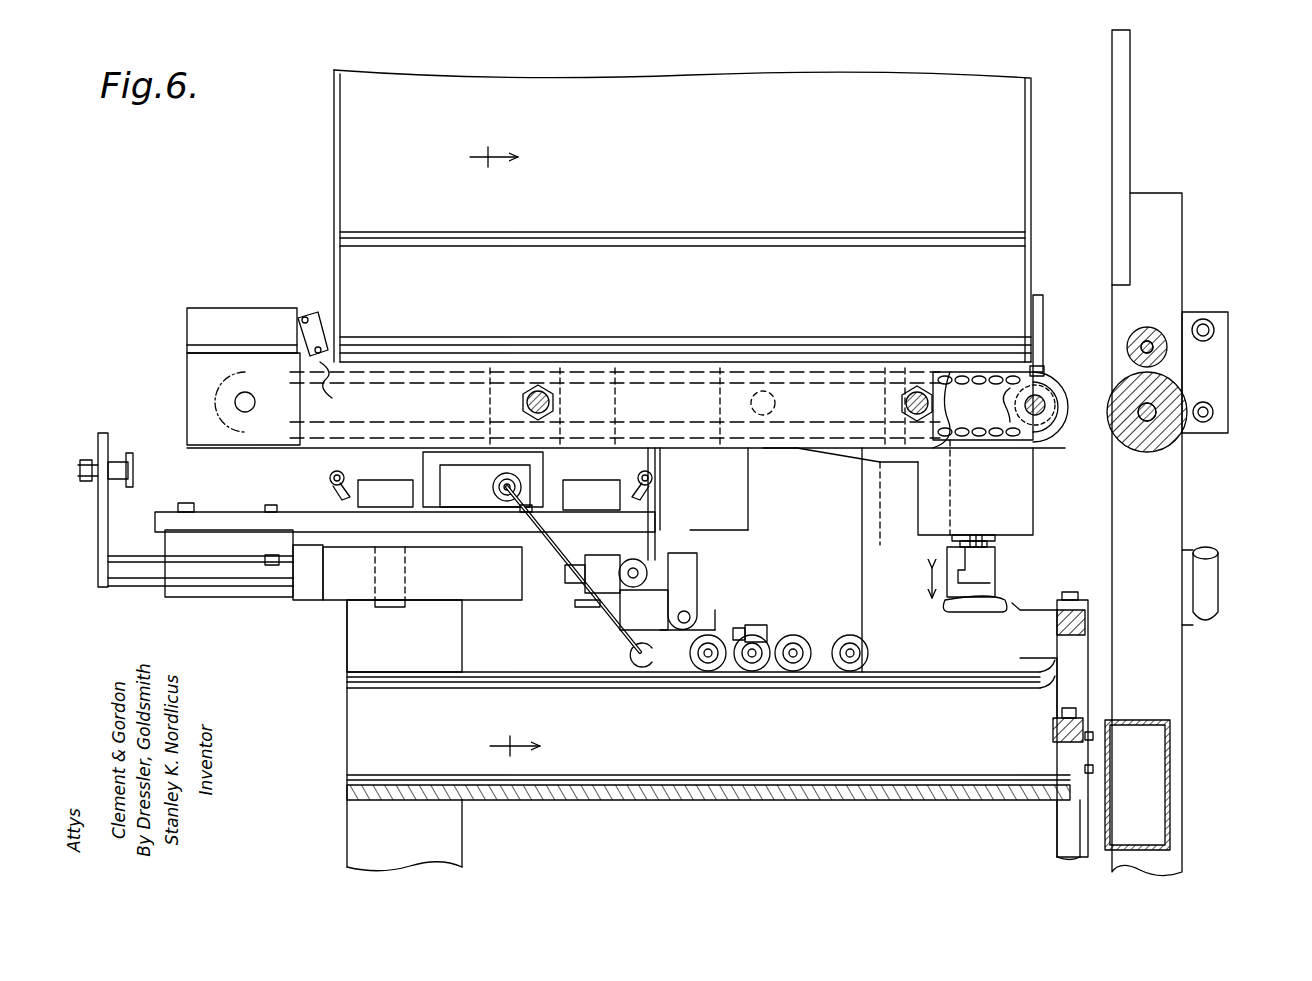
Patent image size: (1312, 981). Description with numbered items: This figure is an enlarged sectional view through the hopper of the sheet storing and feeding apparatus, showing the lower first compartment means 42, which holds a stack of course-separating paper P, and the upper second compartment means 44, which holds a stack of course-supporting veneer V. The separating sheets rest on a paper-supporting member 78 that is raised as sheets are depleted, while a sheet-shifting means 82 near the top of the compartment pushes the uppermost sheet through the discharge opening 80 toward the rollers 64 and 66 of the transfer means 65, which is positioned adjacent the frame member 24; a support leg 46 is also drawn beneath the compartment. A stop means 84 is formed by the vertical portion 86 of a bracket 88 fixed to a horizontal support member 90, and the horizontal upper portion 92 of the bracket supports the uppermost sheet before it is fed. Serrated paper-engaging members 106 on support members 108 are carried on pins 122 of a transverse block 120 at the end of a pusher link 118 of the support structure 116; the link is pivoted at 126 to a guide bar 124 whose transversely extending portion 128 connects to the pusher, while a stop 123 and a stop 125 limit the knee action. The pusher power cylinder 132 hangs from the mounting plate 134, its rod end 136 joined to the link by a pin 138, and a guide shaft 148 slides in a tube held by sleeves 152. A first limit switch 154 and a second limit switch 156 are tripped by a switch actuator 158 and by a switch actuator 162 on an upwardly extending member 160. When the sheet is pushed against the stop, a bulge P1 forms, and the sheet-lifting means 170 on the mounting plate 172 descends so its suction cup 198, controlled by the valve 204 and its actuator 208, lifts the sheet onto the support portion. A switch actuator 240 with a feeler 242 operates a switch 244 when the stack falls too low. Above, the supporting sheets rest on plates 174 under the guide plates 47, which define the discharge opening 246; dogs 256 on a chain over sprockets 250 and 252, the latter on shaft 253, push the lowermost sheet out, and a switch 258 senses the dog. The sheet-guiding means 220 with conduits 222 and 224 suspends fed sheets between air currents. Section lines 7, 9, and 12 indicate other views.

The section line 12 is at (485, 452).
The second compartment means 44 is at (334, 216).
The veneer V is at (762, 238).
The guide plates 47 is at (1033, 318).
The transfer means 65 is at (1192, 366).
The sheet-guiding means 220 is at (1230, 396).
The conduit 222 is at (1206, 320).
The conduit 224 is at (1205, 422).
The roller 66 is at (1140, 440).
The roller 64 is at (1135, 340).
The section line 7 is at (95, 415).
The frame member 24 is at (1172, 752).
The discharge opening 80 is at (1082, 650).
The vertical portion 86 is at (1088, 682).
The bracket 88 is at (1052, 722).
The support member 90 is at (1066, 745).
The upper portion 92 is at (1037, 657).
The support leg 46 is at (1055, 825).
The first compartment means 42 is at (346, 801).
The paper-supporting member 78 is at (766, 800).
The sheet-shifting means 82 is at (343, 655).
The bulge P1 is at (972, 692).
The stop means 84 is at (1050, 698).
The paper P is at (503, 672).
The feeler 242 is at (644, 668).
The stop 123 is at (718, 672).
The pins 122 is at (755, 672).
The paper-engaging members 106 is at (870, 652).
The support member 108 is at (822, 645).
The dogs 256 is at (1010, 362).
The switch 244 is at (462, 468).
The switch actuator 240 is at (590, 545).
The stop 125 is at (622, 638).
The sprocket 252 is at (1045, 425).
The shaft 253 is at (1045, 375).
The discharge opening 246 is at (1064, 353).
The switch 258 is at (280, 310).
The sprocket 250 is at (236, 392).
The section line 9 is at (262, 370).
The switch actuator 162 is at (200, 448).
The upwardly extending member 160 is at (110, 507).
The mounting plate 134 is at (288, 530).
The second limit switch 156 is at (388, 482).
The first limit switch 154 is at (592, 482).
The guide shaft 148 is at (240, 572).
The power cylinder 132 is at (300, 600).
The rod end 136 is at (580, 573).
The sleeves 152 is at (388, 607).
The plates 174 is at (702, 450).
The switch actuator 158 is at (656, 480).
The pin 138 is at (640, 568).
The transversely extending portion 128 is at (665, 576).
The guide bar 124 is at (686, 592).
The support structure 116 is at (712, 545).
The pivot 126 is at (715, 612).
The pusher link 118 is at (720, 615).
The transverse block 120 is at (742, 628).
The mounting plate 172 is at (918, 486).
The sheet-lifting means 170 is at (897, 553).
The actuator 208 is at (998, 545).
The valve 204 is at (985, 568).
The suction cup 198 is at (948, 605).